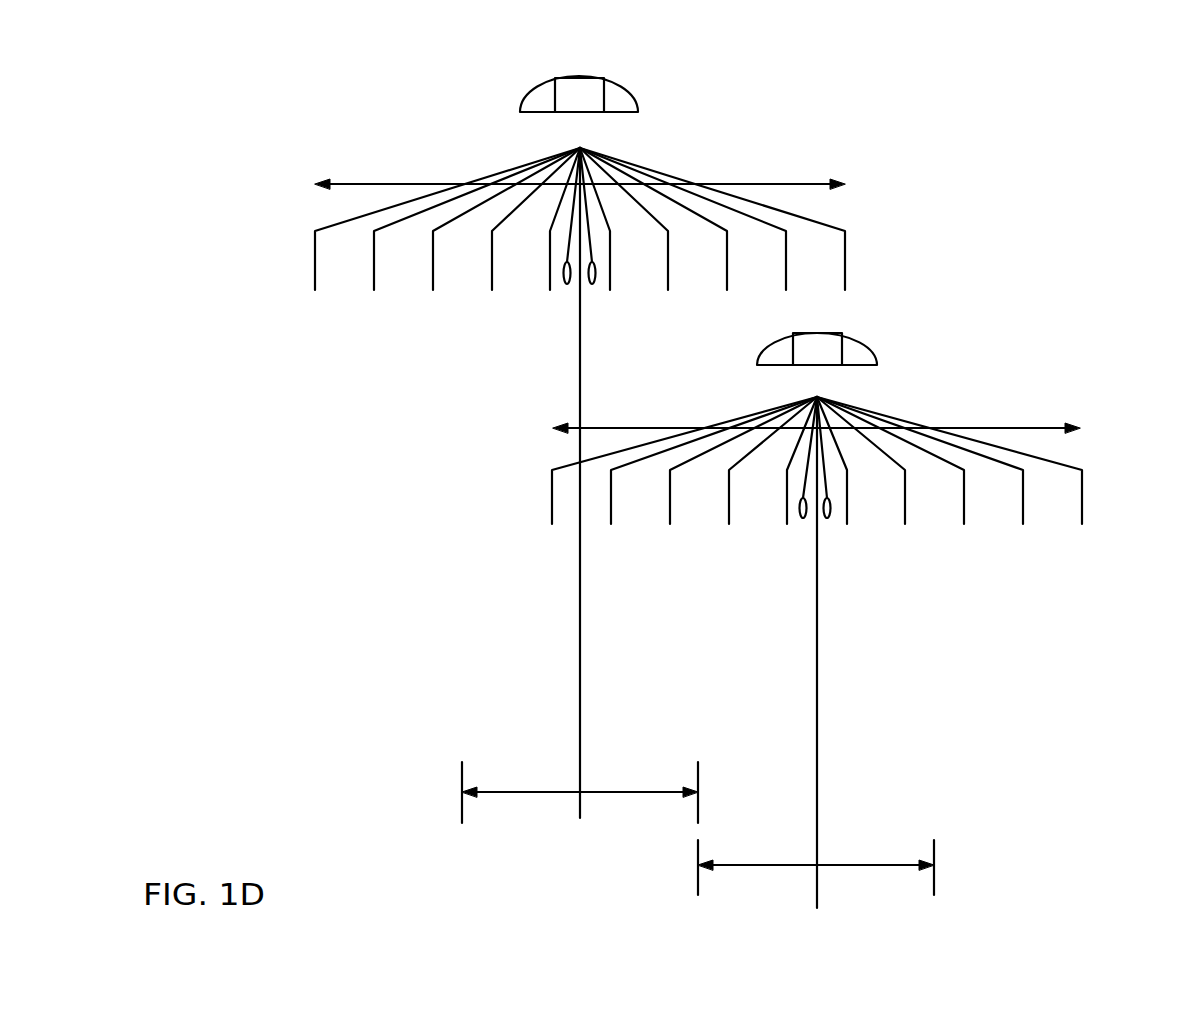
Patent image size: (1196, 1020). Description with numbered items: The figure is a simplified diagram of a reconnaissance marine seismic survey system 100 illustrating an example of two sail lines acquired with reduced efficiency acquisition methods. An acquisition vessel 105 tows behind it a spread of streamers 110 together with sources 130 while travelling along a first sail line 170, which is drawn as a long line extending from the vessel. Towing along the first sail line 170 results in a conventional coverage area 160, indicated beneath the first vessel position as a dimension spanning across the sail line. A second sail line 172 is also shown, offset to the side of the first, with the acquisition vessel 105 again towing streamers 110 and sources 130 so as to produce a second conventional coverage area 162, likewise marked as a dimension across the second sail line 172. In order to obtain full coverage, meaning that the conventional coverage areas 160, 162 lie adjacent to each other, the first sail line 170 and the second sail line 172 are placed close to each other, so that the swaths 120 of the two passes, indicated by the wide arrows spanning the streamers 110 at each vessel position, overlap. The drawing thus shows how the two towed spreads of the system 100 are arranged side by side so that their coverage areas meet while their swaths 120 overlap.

The reconnaissance marine seismic survey system 100 is at (1113, 161).
The acquisition vessel 105 is at (580, 78).
The streamers 110 is at (846, 257).
The overlapping swaths 120 is at (805, 183).
The sources 130 is at (594, 283).
The conventional coverage area 160 is at (590, 793).
The conventional coverage area 162 is at (826, 867).
The first sail line 170 is at (581, 651).
The second sail line 172 is at (818, 710).